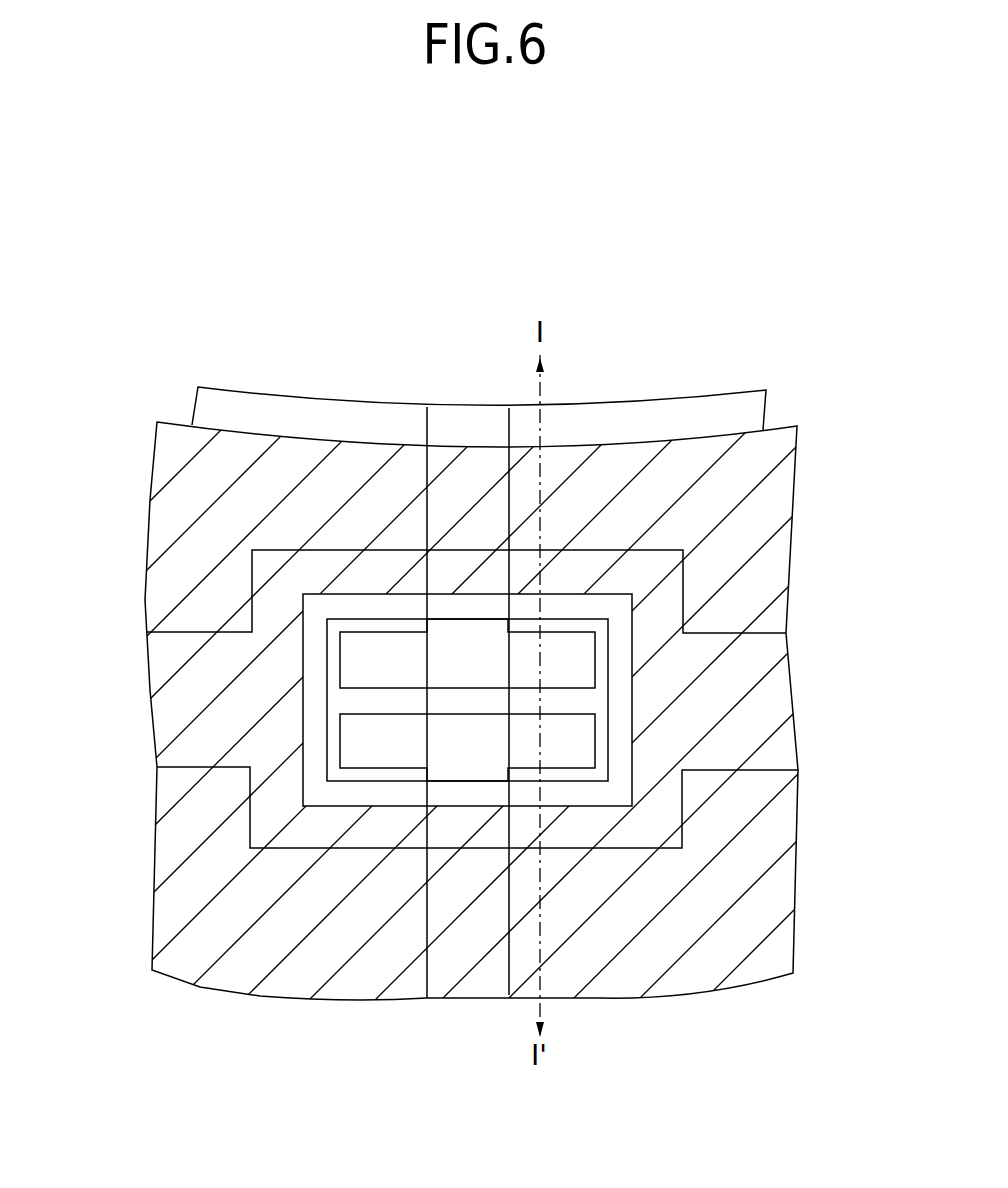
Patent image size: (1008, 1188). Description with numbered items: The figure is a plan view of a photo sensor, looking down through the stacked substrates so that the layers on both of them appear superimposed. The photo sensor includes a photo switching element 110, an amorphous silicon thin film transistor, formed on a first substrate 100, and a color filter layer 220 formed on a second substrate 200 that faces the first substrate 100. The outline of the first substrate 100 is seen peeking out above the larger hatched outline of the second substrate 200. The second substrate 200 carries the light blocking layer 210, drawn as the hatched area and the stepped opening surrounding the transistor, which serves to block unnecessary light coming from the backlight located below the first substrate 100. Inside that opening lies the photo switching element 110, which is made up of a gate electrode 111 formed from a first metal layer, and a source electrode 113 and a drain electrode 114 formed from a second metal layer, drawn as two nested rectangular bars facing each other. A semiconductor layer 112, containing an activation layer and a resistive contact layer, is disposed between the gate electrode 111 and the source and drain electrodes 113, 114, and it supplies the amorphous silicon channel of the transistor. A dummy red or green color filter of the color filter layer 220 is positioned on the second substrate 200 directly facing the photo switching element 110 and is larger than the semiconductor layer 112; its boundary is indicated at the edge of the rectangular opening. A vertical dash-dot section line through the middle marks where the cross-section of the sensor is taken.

The first substrate 100 is at (740, 403).
The second substrate 200 is at (770, 461).
The light blocking layer 210 is at (472, 741).
The color filter layer 220 is at (596, 807).
The photo switching element 110 is at (306, 701).
The gate electrode 111 is at (158, 725).
The semiconductor layer 112 is at (340, 697).
The source electrode 113 is at (352, 658).
The drain electrode 114 is at (345, 743).